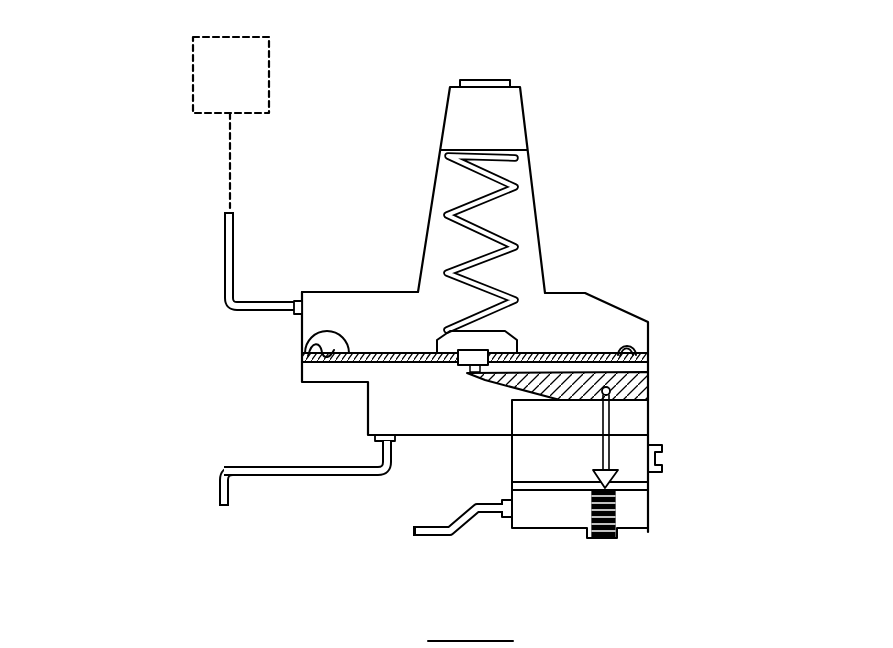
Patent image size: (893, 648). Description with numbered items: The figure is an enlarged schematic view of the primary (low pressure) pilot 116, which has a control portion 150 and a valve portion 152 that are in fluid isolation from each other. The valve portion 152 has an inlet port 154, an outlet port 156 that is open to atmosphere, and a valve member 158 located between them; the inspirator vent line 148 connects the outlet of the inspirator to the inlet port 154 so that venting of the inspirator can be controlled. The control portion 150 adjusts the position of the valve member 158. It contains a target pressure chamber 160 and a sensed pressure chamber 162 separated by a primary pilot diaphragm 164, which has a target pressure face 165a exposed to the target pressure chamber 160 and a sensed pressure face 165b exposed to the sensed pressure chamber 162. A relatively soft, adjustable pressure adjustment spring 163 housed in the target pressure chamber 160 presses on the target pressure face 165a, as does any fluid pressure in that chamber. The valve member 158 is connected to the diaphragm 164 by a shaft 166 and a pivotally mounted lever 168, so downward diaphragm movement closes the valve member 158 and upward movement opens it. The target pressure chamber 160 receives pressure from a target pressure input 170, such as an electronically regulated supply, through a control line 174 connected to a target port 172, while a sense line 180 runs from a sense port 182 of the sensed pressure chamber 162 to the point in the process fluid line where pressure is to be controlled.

The primary pilot 116 is at (640, 63).
The inspirator vent line 148 is at (452, 539).
The control portion 150 is at (733, 82).
The valve portion 152 is at (733, 370).
The inlet port 154 is at (512, 527).
The outlet port 156 is at (660, 463).
The valve member 158 is at (628, 505).
The target pressure chamber 160 is at (358, 300).
The sensed pressure chamber 162 is at (368, 405).
The pressure adjustment spring 163 is at (500, 220).
The primary pilot diaphragm 164 is at (300, 333).
The target pressure face 165a is at (390, 352).
The sensed pressure face 165b is at (408, 363).
The shaft 166 is at (612, 417).
The lever 168 is at (512, 388).
The target pressure input 170 is at (193, 74).
The target port 172 is at (292, 298).
The control line 174 is at (238, 240).
The sense line 180 is at (253, 477).
The sense port 182 is at (395, 442).